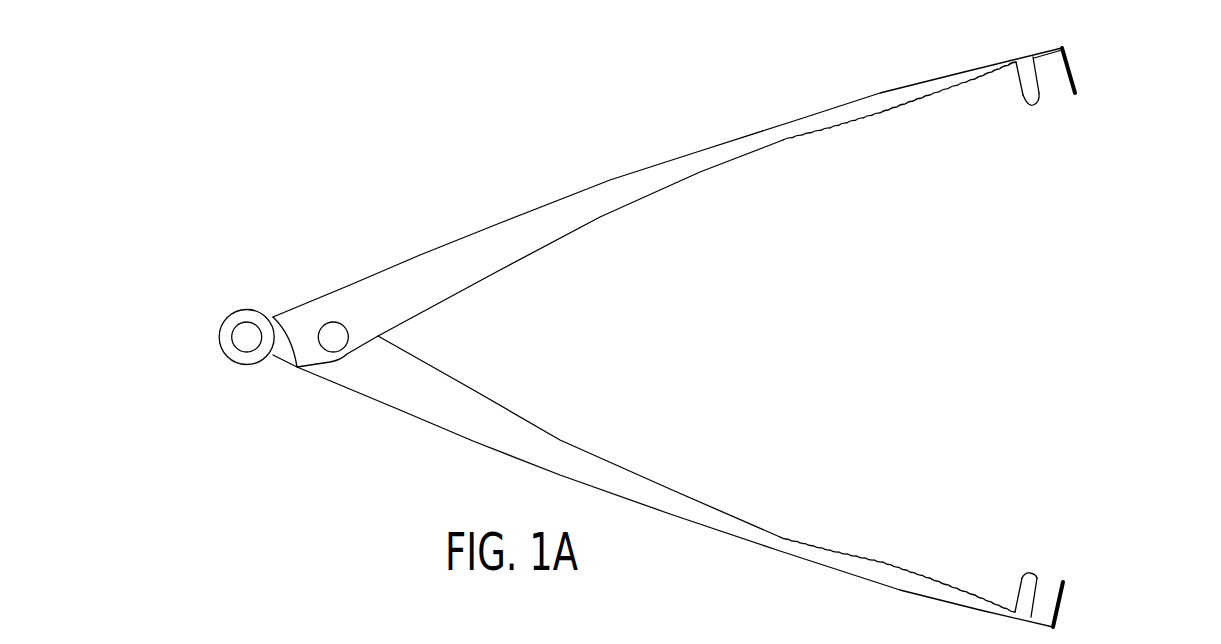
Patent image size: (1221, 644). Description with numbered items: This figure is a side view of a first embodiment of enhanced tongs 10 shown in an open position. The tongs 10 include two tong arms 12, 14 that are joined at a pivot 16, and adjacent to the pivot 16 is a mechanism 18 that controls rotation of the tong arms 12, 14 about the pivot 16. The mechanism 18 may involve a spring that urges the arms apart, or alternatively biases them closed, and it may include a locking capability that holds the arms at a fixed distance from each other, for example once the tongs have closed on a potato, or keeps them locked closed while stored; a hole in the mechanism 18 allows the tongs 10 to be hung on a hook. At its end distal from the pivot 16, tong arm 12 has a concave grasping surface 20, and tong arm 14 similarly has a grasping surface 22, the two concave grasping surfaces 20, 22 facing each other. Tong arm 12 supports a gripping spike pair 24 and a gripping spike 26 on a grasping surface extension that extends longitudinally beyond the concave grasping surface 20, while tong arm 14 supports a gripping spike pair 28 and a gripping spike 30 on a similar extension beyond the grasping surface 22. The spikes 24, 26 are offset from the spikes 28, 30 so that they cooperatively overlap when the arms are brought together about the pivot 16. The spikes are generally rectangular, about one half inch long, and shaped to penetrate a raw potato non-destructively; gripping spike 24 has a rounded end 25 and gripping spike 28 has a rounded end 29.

The tongs 10 is at (396, 459).
The tong arm 12 is at (723, 140).
The tong arm 14 is at (573, 448).
The pivot 16 is at (333, 333).
The mechanism 18 is at (250, 308).
The concave grasping surface 20 is at (892, 113).
The grasping surface 22 is at (883, 562).
The gripping spike pair 24 is at (1018, 80).
The rounded end 25 is at (1035, 106).
The gripping spike 26 is at (1077, 66).
The gripping spike pair 28 is at (1016, 597).
The rounded end 29 is at (1032, 577).
The gripping spike 30 is at (1060, 604).